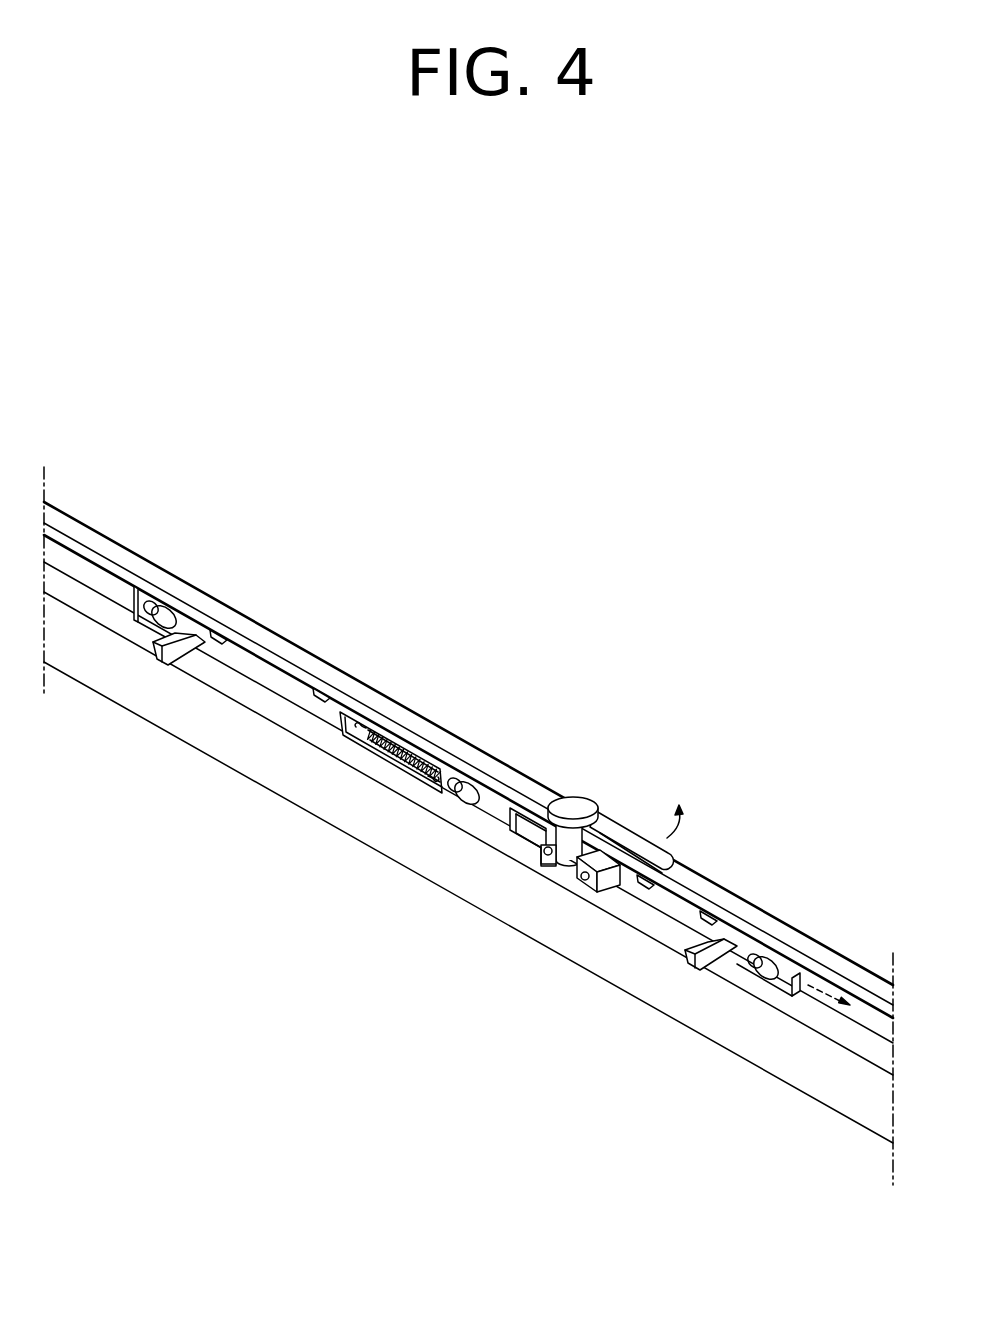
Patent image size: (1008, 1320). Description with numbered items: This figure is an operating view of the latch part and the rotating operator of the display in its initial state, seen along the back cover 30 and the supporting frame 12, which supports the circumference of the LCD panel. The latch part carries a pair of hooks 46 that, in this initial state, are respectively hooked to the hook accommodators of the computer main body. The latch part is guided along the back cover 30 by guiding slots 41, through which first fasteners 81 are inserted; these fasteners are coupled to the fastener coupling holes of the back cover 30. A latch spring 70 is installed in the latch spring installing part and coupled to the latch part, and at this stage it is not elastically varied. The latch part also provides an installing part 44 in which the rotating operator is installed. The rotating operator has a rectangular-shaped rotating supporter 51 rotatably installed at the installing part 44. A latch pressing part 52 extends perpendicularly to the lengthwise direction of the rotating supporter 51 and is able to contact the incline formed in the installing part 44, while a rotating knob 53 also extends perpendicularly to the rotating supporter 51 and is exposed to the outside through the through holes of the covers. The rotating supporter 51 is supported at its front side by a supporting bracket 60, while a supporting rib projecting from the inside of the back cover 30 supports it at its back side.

The supporting frame 12 is at (802, 1010).
The back cover 30 is at (332, 672).
The guiding slots 41 is at (148, 598).
The installing part 44 is at (553, 790).
The hooks 46 is at (214, 606).
The rotating supporter 51 is at (548, 870).
The latch pressing part 52 is at (600, 888).
The rotating knob 53 is at (622, 836).
The supporting bracket 60 is at (558, 878).
The latch spring 70 is at (385, 722).
The first fasteners 81 is at (170, 608).